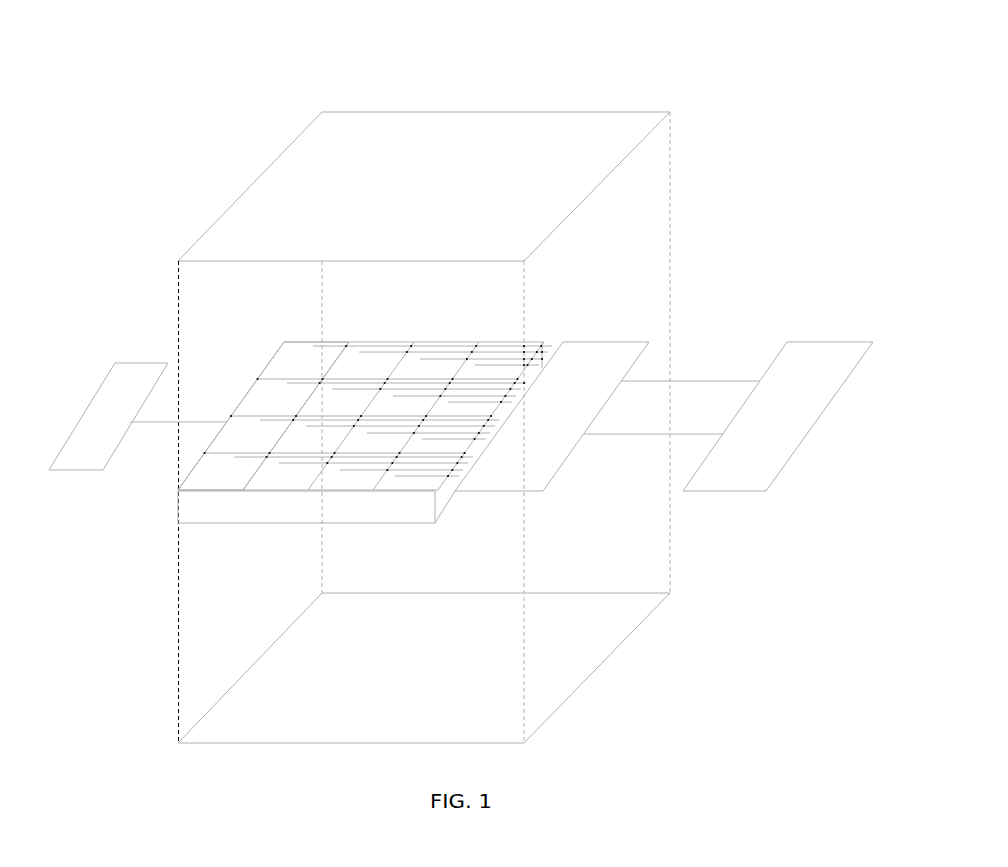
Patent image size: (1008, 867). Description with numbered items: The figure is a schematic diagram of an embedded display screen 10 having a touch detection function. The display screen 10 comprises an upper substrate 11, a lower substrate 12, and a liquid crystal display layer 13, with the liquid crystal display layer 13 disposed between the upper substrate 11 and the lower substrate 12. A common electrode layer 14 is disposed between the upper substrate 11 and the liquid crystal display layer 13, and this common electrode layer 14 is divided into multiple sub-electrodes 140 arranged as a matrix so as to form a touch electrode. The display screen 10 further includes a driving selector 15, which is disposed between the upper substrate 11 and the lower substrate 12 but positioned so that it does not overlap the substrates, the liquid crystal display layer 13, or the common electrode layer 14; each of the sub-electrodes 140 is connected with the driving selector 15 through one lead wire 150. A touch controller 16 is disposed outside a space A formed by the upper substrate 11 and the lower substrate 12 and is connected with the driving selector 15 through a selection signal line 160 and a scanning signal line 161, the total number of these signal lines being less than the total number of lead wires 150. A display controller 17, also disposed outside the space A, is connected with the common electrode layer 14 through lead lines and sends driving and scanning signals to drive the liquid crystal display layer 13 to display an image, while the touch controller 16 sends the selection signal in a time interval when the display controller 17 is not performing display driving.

The display screen 10 is at (434, 46).
The upper substrate 11 is at (605, 112).
The lower substrate 12 is at (620, 642).
The liquid crystal display layer 13 is at (370, 507).
The common electrode layer 14 is at (280, 353).
The sub-electrodes 140 is at (200, 478).
The lead wire 150 is at (253, 413).
The driving selector 15 is at (592, 342).
The touch controller 16 is at (820, 339).
The selection signal line 160 is at (688, 381).
The scanning signal line 161 is at (605, 434).
The display controller 17 is at (135, 362).
The space A is at (672, 163).